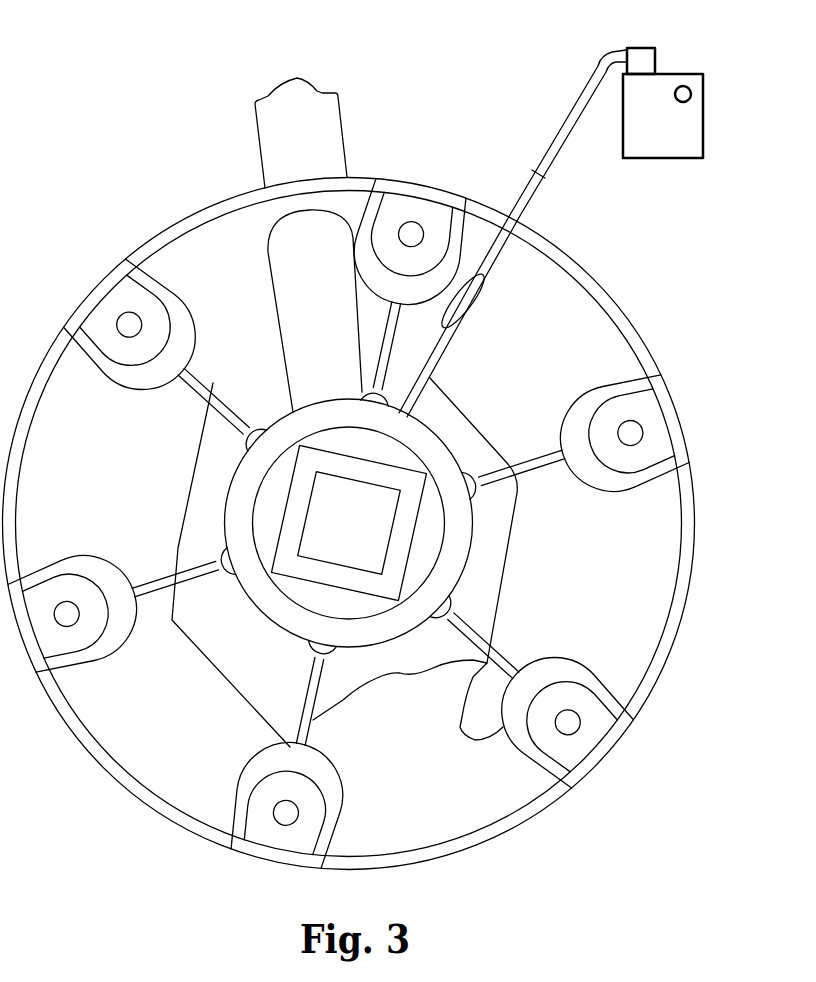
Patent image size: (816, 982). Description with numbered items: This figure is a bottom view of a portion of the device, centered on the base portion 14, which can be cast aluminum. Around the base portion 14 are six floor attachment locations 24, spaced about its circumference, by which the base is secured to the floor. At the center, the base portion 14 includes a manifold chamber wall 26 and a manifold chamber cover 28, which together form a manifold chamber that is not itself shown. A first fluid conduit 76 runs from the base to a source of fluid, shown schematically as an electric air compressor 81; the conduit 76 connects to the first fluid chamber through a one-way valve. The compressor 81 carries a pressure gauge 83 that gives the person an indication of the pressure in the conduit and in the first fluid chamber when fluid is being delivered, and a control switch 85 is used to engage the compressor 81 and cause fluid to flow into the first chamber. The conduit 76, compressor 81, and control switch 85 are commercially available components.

The base portion 14 is at (86, 412).
The floor attachment locations 24 is at (300, 805).
The manifold chamber wall 26 is at (245, 522).
The manifold chamber cover 28 is at (423, 533).
The first fluid conduit 76 is at (616, 50).
The electric air compressor 81 is at (704, 84).
The pressure gauge 83 is at (692, 96).
The control switch 85 is at (657, 55).